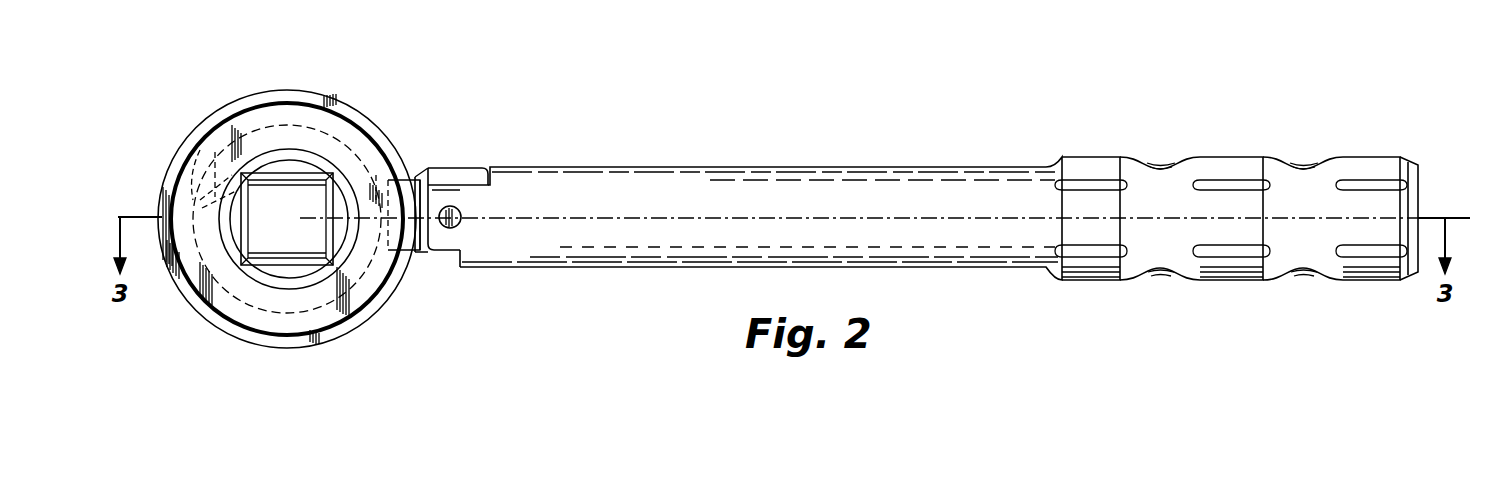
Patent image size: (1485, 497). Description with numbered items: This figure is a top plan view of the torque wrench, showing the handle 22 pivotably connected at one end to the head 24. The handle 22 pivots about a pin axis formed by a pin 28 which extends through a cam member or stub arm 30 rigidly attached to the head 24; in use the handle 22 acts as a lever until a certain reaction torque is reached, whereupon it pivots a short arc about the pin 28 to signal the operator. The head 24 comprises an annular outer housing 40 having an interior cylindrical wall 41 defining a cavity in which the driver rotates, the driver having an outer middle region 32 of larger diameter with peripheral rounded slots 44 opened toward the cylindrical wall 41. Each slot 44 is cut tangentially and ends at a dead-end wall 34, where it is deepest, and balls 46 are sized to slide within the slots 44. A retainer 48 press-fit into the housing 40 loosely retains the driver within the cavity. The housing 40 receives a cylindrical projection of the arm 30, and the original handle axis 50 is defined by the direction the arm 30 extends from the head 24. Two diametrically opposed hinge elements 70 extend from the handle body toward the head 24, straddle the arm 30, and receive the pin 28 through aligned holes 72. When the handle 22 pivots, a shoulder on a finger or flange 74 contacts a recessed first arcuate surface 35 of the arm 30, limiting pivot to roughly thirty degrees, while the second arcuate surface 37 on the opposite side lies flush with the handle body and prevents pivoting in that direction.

The handle 22 is at (955, 167).
The head 24 is at (238, 100).
The pin 28 is at (458, 220).
The cam member or stub arm 30 is at (453, 164).
The outer middle region 32 is at (212, 290).
The dead-end wall 34 is at (195, 287).
The first arcuate surface 35 is at (430, 245).
The second arcuate surface 37 is at (474, 170).
The annular outer housing 40 is at (187, 140).
The interior cylindrical wall 41 is at (281, 310).
The peripheral rounded slots 44 is at (215, 192).
The balls 46 is at (205, 210).
The retainer 48 is at (230, 130).
The original handle axis 50 is at (622, 218).
The hinge elements 70 is at (442, 192).
The aligned holes 72 is at (445, 225).
The finger or flange 74 is at (465, 268).